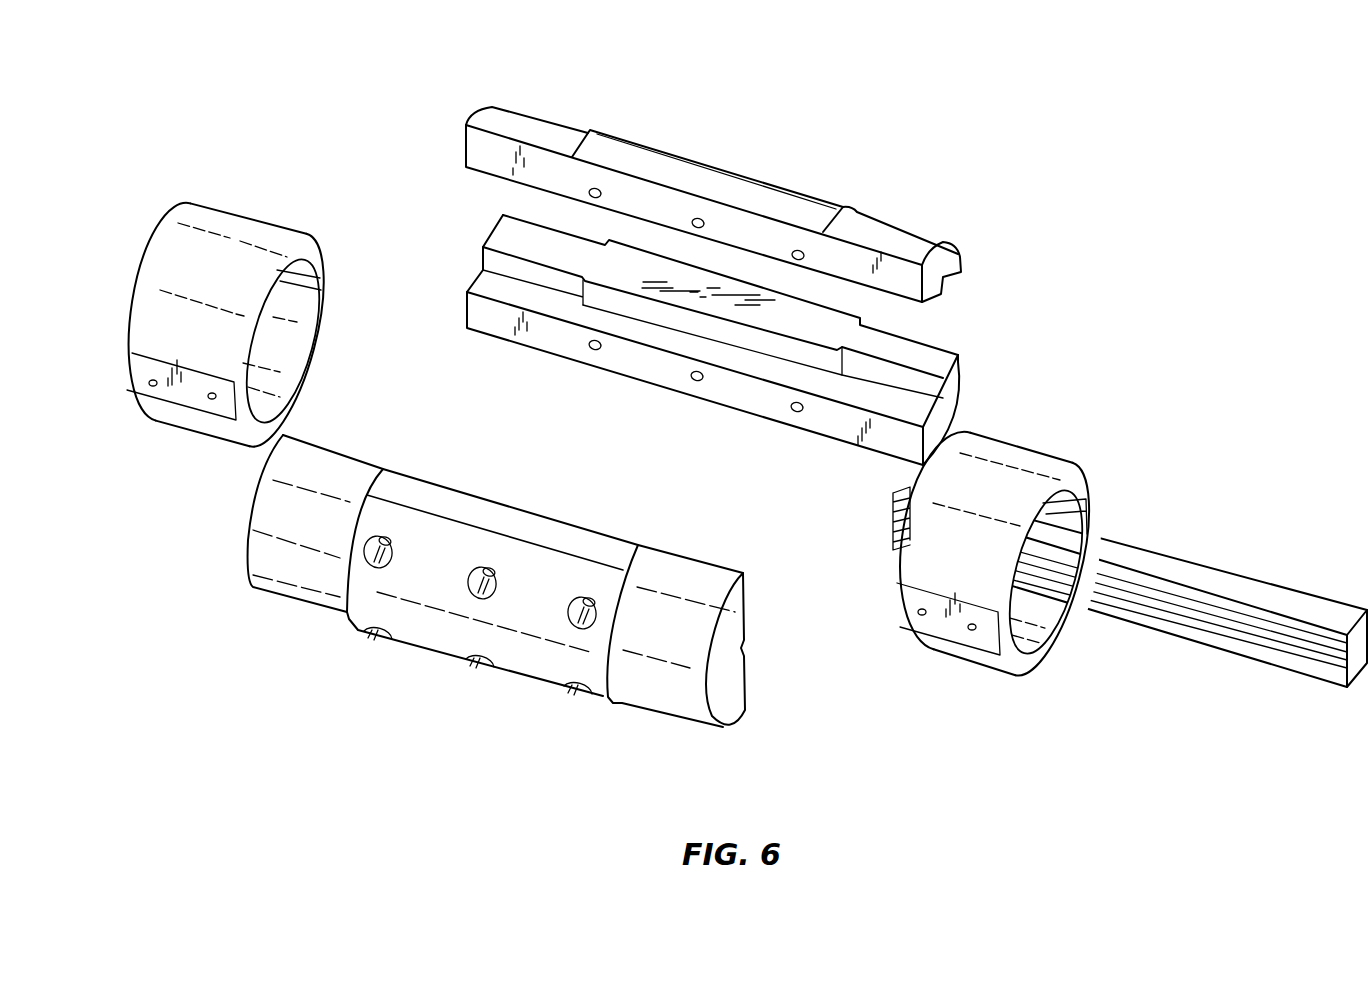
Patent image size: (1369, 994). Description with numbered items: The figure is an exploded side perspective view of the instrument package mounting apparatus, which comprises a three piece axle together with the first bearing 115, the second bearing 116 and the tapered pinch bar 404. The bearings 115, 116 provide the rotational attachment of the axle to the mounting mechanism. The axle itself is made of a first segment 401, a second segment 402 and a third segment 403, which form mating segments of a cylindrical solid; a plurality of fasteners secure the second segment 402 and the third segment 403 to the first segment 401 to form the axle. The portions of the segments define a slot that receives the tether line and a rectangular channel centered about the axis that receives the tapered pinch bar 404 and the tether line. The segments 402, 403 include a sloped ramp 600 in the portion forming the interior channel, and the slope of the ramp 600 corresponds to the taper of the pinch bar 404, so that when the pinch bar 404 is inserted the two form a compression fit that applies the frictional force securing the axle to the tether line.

The first bearing 115 is at (962, 658).
The second bearing 116 is at (188, 436).
The first segment 401 is at (433, 644).
The second segment 402 is at (514, 120).
The third segment 403 is at (487, 322).
The tapered pinch bar 404 is at (1307, 605).
The sloped ramp 600 is at (740, 342).